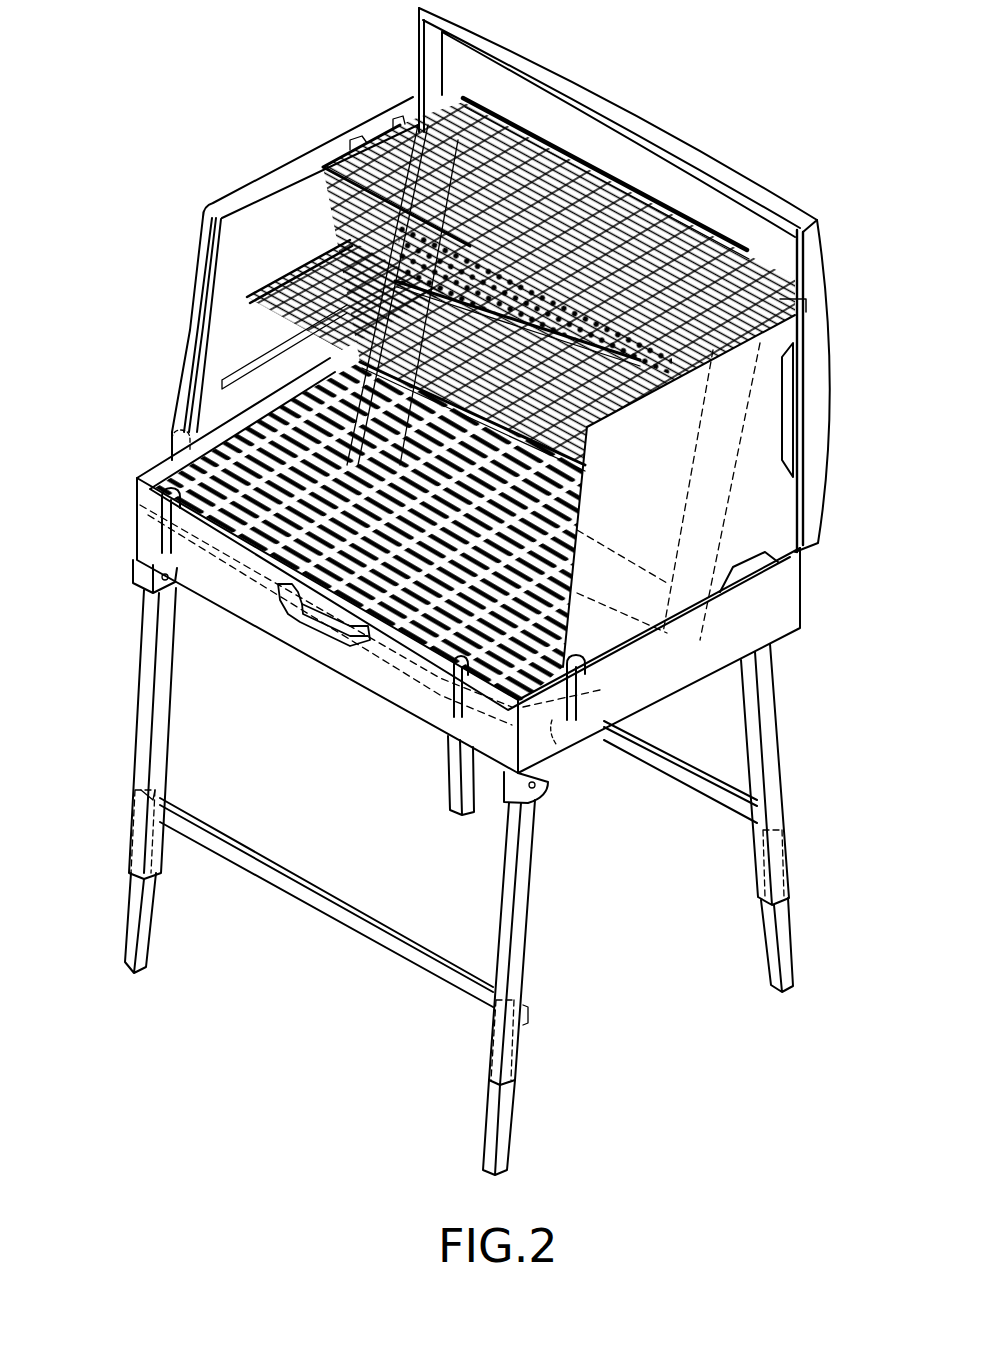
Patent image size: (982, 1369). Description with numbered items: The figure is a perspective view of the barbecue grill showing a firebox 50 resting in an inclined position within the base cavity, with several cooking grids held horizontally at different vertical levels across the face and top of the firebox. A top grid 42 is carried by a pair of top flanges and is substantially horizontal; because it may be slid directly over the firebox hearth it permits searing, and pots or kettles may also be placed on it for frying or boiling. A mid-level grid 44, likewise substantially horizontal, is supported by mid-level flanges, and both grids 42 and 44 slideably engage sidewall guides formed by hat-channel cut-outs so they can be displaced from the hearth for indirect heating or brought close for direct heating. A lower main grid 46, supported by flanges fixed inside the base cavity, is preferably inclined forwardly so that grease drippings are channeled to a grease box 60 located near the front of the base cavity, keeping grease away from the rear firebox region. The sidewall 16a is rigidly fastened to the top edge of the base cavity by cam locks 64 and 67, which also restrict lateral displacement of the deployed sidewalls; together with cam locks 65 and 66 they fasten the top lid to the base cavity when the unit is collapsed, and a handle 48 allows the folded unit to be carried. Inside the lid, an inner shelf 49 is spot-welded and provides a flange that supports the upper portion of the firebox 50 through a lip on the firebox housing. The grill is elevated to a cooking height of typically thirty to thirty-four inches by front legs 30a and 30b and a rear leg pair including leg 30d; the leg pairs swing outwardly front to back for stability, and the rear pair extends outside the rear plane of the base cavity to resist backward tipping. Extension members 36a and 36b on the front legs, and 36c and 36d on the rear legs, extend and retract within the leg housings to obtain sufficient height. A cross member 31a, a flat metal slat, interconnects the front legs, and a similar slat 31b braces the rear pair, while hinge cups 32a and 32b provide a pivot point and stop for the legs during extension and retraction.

The sidewall 16a is at (224, 198).
The inner shelf 49 is at (419, 83).
The top grid 42 is at (346, 187).
The mid-level grid 44 is at (257, 290).
The main grid 46 is at (230, 447).
The cam lock 67 is at (165, 430).
The cam lock 66 is at (160, 522).
The cam lock 65 is at (437, 703).
The cam lock 64 is at (583, 693).
The handle 48 is at (313, 630).
The hinge cup 32a is at (133, 578).
The hinge cup 32b is at (540, 793).
The grease box 60 is at (553, 735).
The front leg 30a is at (133, 767).
The front leg 30b is at (523, 1003).
The rear leg 30d is at (779, 723).
The extension member 36a is at (147, 930).
The extension member 36b is at (510, 1130).
The extension member 36c is at (448, 780).
The extension member 36d is at (790, 960).
The cross member 31a is at (317, 887).
The cross member support 31b is at (653, 765).
The firebox 50 is at (740, 433).